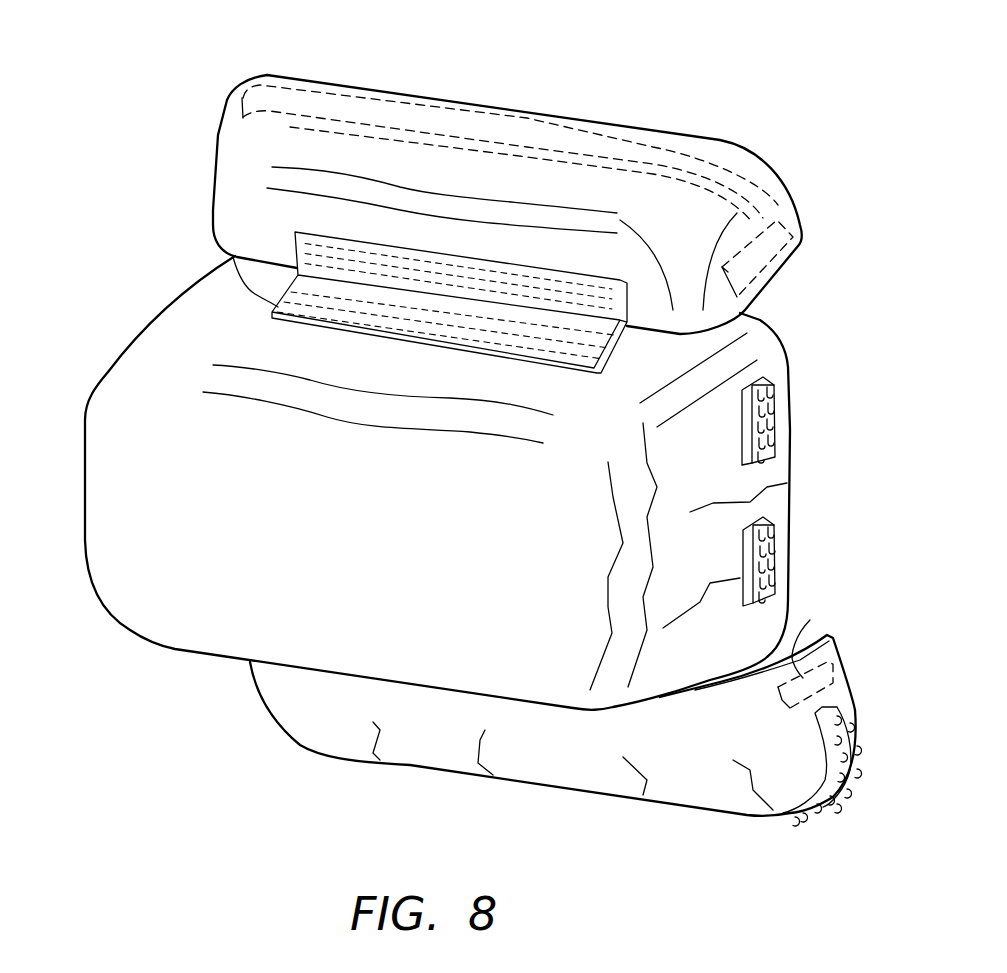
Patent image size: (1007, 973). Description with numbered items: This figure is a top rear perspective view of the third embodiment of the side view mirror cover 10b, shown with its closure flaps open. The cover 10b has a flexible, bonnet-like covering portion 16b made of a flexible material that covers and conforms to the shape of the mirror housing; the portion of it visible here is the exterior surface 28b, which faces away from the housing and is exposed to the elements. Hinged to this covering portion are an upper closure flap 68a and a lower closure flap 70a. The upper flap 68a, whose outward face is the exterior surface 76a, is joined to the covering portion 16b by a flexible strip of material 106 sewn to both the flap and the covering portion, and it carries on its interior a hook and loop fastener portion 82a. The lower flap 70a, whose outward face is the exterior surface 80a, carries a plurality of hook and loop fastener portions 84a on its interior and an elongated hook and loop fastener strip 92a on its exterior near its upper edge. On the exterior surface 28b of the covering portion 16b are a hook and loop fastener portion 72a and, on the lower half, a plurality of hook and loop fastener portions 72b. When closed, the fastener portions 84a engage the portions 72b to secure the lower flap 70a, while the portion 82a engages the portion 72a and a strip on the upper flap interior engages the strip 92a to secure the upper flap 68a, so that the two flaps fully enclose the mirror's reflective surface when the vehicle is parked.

The side view mirror cover 10b is at (130, 294).
The bonnet-like covering portion 16b is at (115, 372).
The exterior surface 28b is at (392, 585).
The upper closure flap 68a is at (647, 107).
The lower closure flap 70a is at (567, 812).
The hook and loop fastener portion 72a is at (777, 433).
The hook and loop fastener portions 72b is at (777, 567).
The exterior surface 76a is at (470, 181).
The exterior surface 80a is at (455, 738).
The hook and loop fastener portion 82a is at (767, 243).
The hook and loop fastener portions 84a is at (813, 615).
The hook and loop fastener portion 92a is at (837, 747).
The flexible strip of material 106 is at (233, 257).